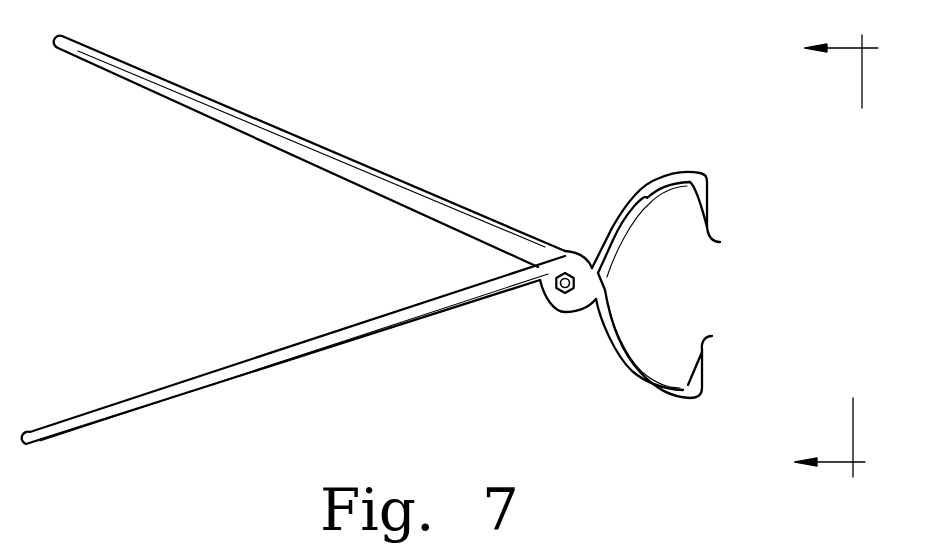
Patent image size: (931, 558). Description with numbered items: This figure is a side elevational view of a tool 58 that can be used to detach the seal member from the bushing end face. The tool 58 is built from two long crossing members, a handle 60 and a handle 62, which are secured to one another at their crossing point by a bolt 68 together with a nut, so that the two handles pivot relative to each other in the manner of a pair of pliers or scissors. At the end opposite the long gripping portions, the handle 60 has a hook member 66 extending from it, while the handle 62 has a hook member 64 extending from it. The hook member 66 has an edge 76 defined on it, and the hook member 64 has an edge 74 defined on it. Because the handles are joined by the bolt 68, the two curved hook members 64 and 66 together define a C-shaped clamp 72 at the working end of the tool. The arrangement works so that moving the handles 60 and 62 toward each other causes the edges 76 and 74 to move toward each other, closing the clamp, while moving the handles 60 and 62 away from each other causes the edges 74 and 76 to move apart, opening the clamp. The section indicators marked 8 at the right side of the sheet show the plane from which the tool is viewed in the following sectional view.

The tool 58 is at (388, 104).
The handle 60 is at (152, 79).
The handle 62 is at (148, 403).
The hook member 64 is at (668, 176).
The hook member 66 is at (663, 398).
The bolt 68 is at (567, 282).
The C-shaped clamp 72 is at (756, 192).
The edge 74 is at (720, 242).
The edge 76 is at (712, 336).
The section line 8- 8 is at (845, 257).